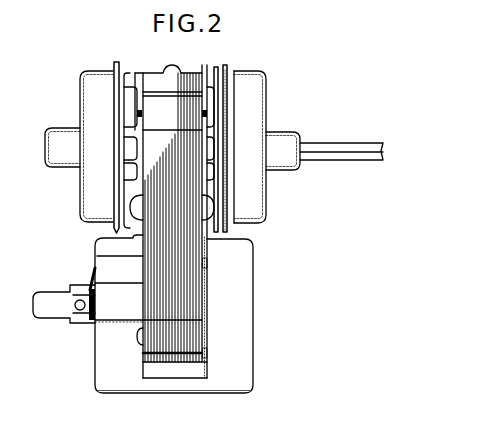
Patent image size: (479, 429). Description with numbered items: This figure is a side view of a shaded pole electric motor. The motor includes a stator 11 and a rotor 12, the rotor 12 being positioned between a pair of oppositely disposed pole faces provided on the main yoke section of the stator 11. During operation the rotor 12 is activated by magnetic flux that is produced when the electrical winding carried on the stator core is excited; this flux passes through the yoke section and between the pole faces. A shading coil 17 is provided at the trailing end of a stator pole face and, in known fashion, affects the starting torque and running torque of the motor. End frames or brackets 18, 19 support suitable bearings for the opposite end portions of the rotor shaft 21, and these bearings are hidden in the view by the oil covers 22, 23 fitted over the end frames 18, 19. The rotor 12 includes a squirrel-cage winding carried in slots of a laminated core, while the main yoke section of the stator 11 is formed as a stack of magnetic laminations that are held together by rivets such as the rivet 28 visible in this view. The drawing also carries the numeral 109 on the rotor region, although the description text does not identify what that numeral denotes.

The stator 11 is at (157, 80).
The rotor 12 is at (207, 92).
The shading coil 17 is at (215, 238).
The end frame 18 is at (131, 69).
The end frame 19 is at (203, 70).
The rotor shaft 21 is at (332, 148).
The oil cover 22 is at (90, 82).
The oil cover 23 is at (262, 97).
The rivet 28 is at (133, 338).
The brush 109 is at (209, 263).